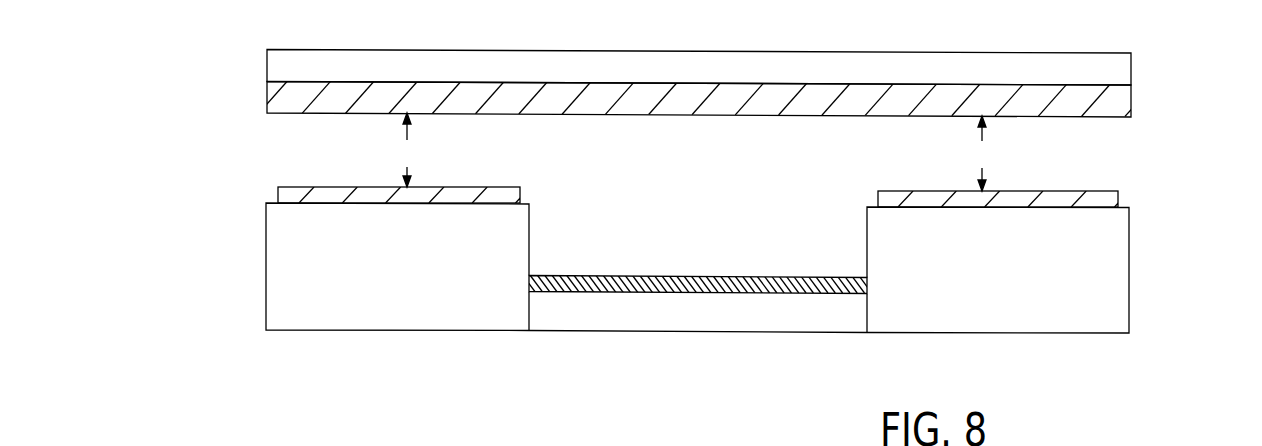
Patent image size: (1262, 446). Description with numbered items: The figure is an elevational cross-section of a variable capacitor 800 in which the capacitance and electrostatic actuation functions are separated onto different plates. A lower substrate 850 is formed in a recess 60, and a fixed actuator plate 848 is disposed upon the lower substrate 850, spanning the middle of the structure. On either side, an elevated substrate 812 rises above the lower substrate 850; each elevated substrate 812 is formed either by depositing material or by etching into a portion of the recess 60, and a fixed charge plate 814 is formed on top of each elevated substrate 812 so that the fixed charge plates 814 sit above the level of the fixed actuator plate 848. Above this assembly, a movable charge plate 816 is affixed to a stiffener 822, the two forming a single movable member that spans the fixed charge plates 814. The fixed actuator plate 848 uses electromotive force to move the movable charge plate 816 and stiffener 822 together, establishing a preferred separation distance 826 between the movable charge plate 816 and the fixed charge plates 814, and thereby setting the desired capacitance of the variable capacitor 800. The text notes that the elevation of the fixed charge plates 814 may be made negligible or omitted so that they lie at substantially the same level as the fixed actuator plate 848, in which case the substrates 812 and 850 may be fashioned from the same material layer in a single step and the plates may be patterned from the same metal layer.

The variable capacitor 800 is at (218, 36).
The stiffener 822 is at (1122, 62).
The movable charge plate 816 is at (1122, 98).
The separation distance 826 is at (693, 152).
The fixed charge plate 814 is at (278, 194).
The elevated substrate 812 is at (396, 280).
The fixed actuator plate 848 is at (669, 276).
The recess 60 is at (622, 265).
The lower substrate 850 is at (777, 307).